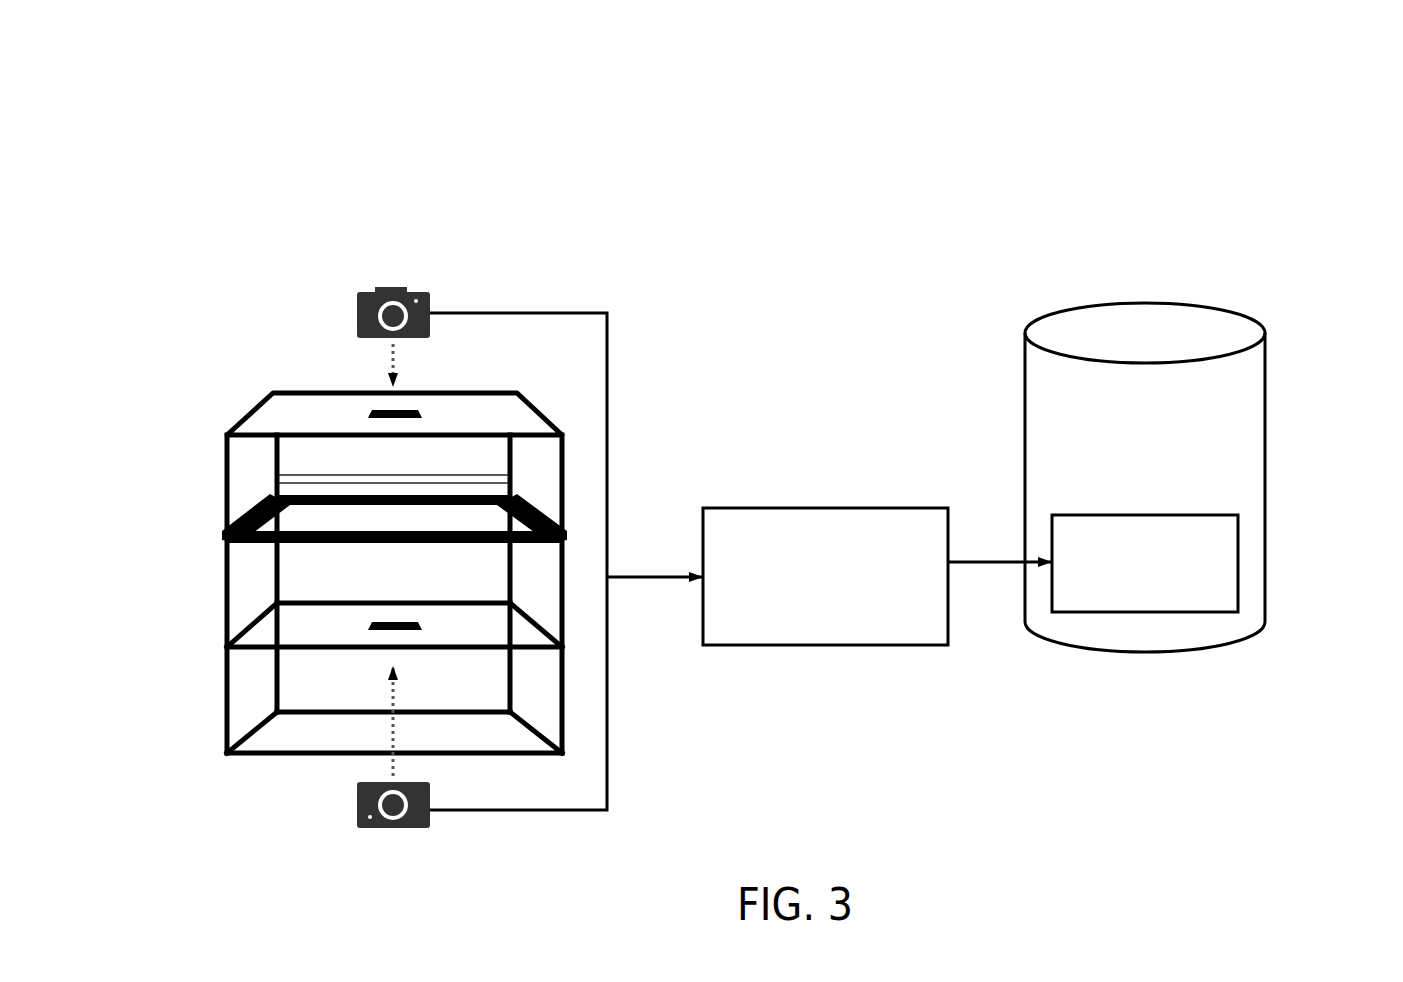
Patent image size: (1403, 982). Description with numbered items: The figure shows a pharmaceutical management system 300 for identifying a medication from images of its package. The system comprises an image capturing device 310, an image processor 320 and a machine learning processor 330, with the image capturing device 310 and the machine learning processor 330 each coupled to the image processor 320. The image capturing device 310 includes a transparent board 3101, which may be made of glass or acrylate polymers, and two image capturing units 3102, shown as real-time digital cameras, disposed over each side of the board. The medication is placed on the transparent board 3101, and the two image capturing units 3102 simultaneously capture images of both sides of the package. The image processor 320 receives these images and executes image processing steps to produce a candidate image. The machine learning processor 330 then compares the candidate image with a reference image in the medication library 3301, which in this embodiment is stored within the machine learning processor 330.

The pharmaceutical management system 300 is at (75, 67).
The image capturing device 310 is at (257, 238).
The transparent board 3101 is at (340, 513).
The image capturing units 3102 is at (428, 278).
The image processor 320 is at (898, 504).
The machine learning processor 330 is at (1146, 336).
The medication library 3301 is at (1240, 560).